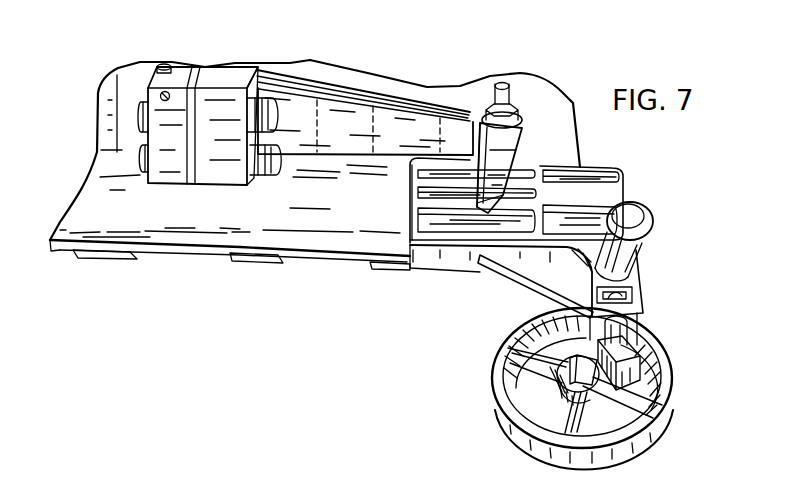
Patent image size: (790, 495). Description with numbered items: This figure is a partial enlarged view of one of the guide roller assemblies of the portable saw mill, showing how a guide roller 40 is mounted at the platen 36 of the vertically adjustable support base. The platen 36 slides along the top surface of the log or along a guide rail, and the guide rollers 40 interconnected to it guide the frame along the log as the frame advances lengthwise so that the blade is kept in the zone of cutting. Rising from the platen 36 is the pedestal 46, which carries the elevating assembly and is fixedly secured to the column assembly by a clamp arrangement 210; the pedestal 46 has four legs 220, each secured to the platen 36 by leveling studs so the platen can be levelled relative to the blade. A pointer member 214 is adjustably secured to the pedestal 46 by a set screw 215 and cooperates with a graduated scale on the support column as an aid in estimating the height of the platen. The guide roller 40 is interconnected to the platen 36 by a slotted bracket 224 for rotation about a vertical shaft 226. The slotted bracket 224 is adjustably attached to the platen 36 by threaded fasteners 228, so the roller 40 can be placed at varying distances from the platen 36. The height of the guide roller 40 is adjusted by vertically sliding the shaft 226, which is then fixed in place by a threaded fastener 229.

The platen 36 is at (173, 237).
The guide rollers 40 is at (498, 372).
The pedestal 46 is at (340, 118).
The clamp arrangement 210 is at (177, 176).
The pointer member 214 is at (170, 67).
The set screw 215 is at (145, 105).
The legs 220 is at (112, 125).
The brackets 224 is at (440, 258).
The vertical shaft 226 is at (632, 258).
The threaded fasteners 228 is at (521, 137).
The threaded fastener 229 is at (650, 393).